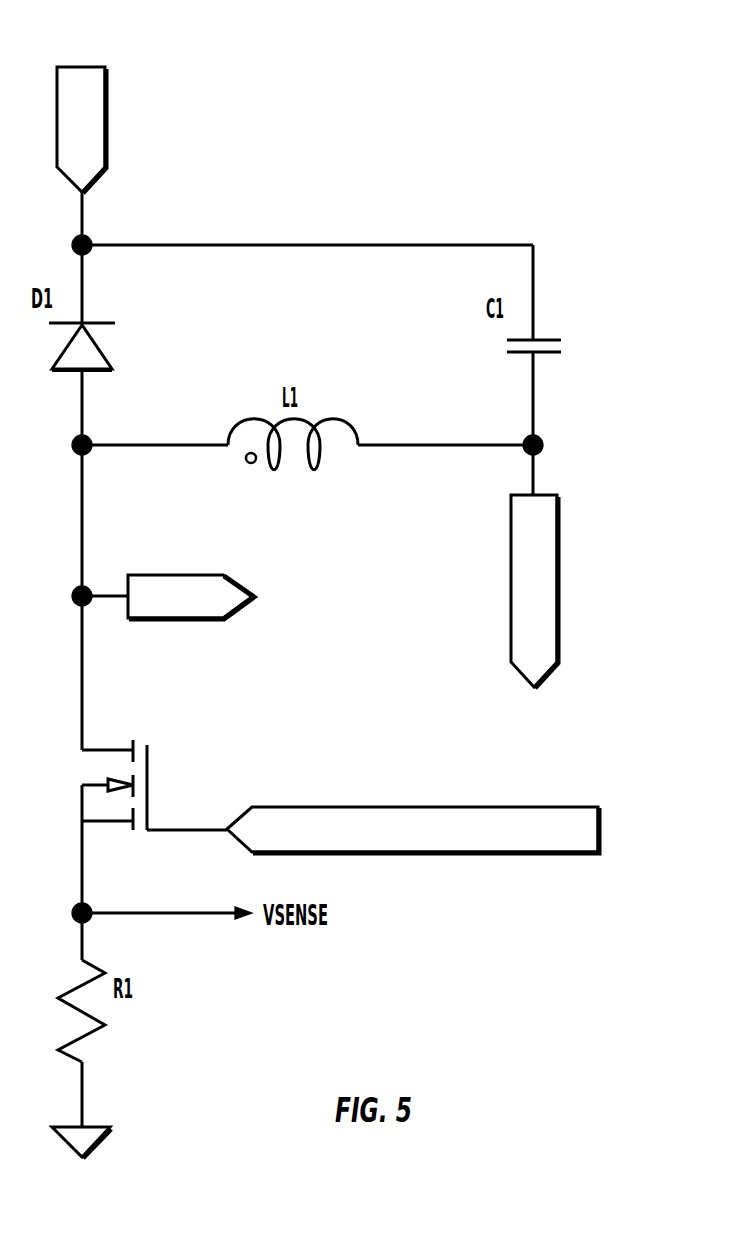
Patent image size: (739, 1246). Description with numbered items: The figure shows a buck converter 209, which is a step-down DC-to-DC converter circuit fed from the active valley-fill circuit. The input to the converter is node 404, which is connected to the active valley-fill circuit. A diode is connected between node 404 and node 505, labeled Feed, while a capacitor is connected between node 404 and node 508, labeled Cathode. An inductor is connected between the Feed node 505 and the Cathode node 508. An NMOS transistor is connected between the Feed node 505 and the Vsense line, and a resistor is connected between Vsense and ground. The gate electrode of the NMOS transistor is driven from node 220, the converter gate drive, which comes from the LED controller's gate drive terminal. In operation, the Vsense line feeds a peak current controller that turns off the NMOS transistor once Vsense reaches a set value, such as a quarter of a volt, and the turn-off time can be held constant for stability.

The buck converter 209 is at (316, 80).
The node 404 is at (105, 110).
The node (Cathode) 508 is at (542, 443).
The node (Feed) 505 is at (86, 589).
The node (converter gate drive) 220 is at (318, 805).